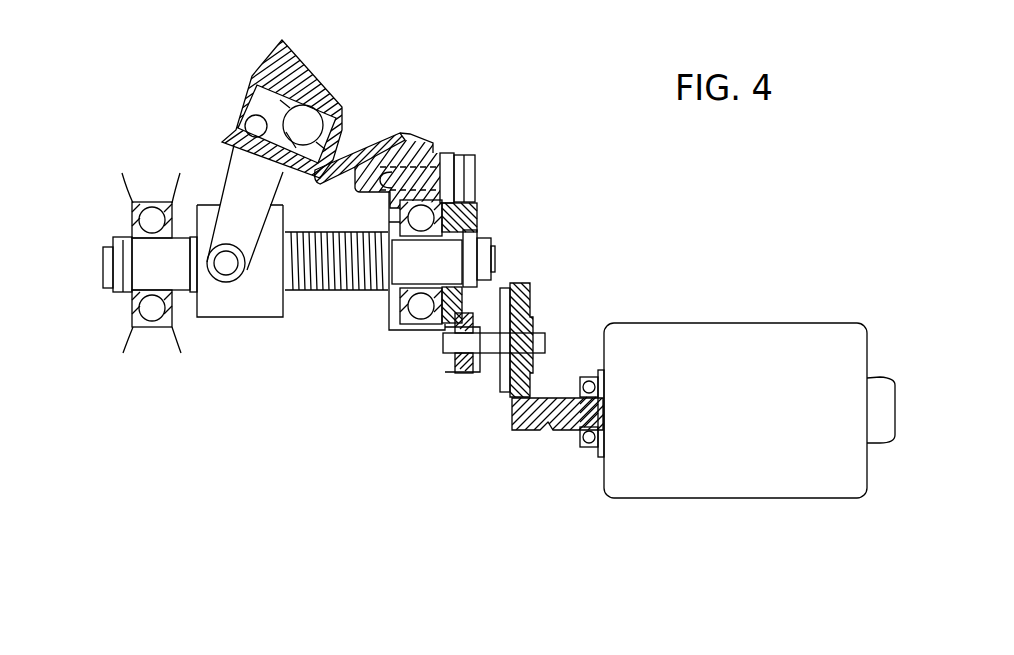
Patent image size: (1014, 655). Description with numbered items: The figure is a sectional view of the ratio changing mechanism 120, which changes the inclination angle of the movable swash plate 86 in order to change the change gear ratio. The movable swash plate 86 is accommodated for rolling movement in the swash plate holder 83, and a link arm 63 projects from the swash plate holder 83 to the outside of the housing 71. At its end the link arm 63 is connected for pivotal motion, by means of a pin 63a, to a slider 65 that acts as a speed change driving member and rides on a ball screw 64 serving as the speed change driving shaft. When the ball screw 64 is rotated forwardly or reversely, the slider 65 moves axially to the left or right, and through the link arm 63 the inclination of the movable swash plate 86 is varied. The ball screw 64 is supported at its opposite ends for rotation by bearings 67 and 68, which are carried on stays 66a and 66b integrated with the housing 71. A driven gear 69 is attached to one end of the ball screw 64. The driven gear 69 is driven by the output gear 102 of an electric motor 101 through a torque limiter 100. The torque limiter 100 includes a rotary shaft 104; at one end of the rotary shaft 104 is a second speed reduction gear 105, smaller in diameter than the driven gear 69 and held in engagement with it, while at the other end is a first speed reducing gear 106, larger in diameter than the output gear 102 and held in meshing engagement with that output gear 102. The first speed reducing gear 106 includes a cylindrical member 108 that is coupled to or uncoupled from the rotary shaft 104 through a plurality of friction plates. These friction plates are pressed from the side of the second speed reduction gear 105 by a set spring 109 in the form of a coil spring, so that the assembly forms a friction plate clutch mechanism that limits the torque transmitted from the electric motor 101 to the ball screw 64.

The link arm 63 is at (224, 177).
The pin 63a is at (228, 268).
The ball screw 64 is at (312, 291).
The slider 65 is at (267, 295).
The stay 66a is at (147, 350).
The stay 66b is at (422, 340).
The bearing 67 is at (128, 328).
The bearing 68 is at (400, 300).
The driven gear 69 is at (477, 215).
The housing 71 is at (410, 140).
The swash plate holder 83 is at (355, 150).
The movable swash plate 86 is at (290, 63).
The torque limiter 100 is at (550, 480).
The electric motor 101 is at (770, 357).
The output gear 102 is at (520, 435).
The rotary shaft 104 is at (545, 345).
The second speed reduction gear 105 is at (462, 375).
The first speed reducing gear 106 is at (530, 283).
The cylindrical member 108 is at (502, 292).
The set spring 109 is at (478, 380).
The ratio changing mechanism 120 is at (403, 379).